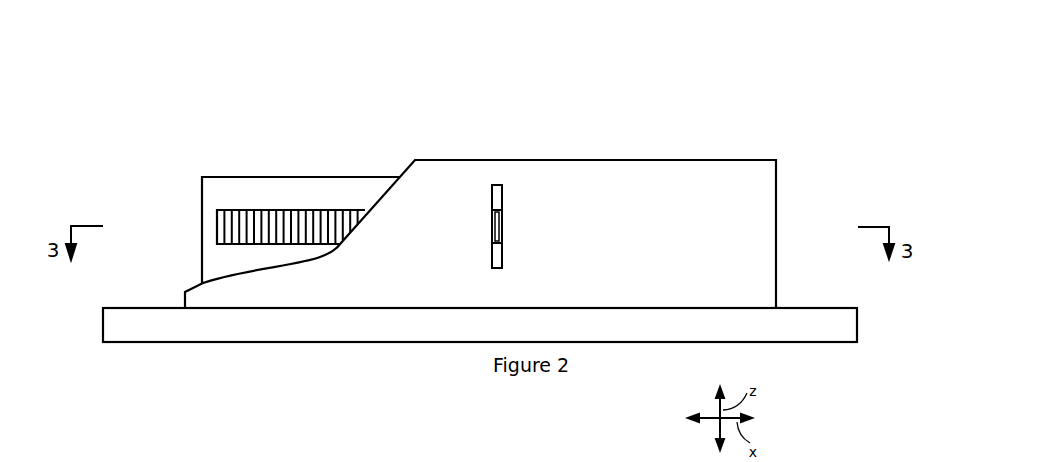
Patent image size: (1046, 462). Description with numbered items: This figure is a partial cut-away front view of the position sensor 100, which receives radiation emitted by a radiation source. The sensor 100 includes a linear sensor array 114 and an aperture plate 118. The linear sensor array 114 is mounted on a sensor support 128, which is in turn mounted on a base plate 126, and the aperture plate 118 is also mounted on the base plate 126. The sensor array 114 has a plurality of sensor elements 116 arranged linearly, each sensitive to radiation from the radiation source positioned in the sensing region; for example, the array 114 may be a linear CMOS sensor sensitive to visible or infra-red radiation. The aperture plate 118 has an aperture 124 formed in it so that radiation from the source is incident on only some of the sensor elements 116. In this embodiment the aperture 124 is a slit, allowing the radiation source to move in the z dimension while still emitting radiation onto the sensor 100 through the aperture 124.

The position sensor 100 is at (502, 238).
The linear sensor array 114 is at (237, 210).
The sensor elements 116 is at (305, 217).
The aperture plate 118 is at (677, 212).
The aperture 124 is at (496, 190).
The base plate 126 is at (307, 325).
The sensor support 128 is at (265, 194).